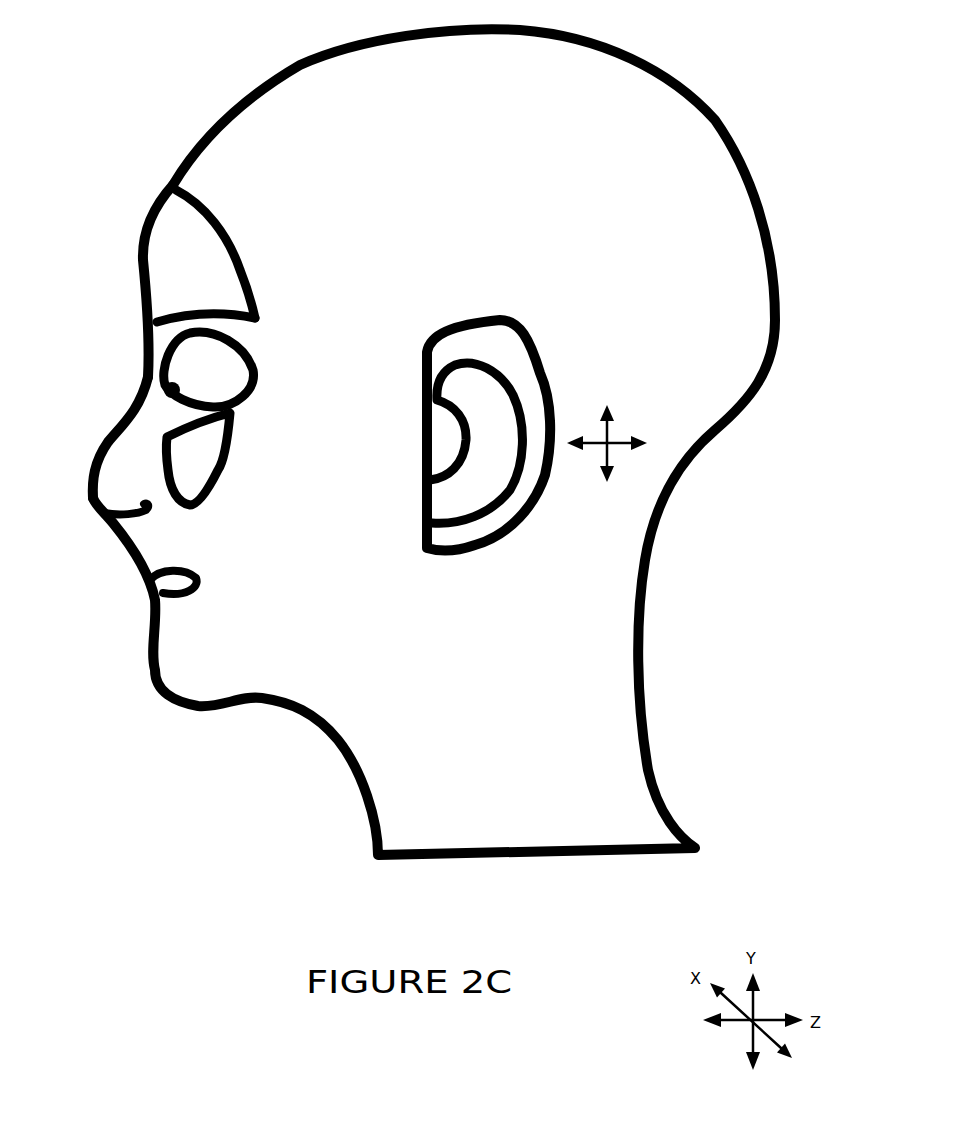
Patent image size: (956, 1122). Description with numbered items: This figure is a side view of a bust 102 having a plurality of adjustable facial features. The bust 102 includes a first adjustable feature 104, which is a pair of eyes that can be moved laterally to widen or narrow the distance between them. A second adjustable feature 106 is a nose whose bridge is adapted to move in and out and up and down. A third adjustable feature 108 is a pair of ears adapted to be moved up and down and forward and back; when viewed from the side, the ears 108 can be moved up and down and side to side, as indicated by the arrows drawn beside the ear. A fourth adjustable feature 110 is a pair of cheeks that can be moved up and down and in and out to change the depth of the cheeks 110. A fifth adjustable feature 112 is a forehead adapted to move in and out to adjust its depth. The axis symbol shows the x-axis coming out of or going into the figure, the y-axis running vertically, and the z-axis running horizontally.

The bust 102 is at (138, 150).
The first adjustable feature 104 is at (233, 384).
The second adjustable feature 106 is at (156, 388).
The third adjustable feature 108 is at (530, 388).
The fourth adjustable feature 110 is at (218, 465).
The fifth adjustable feature 112 is at (205, 287).